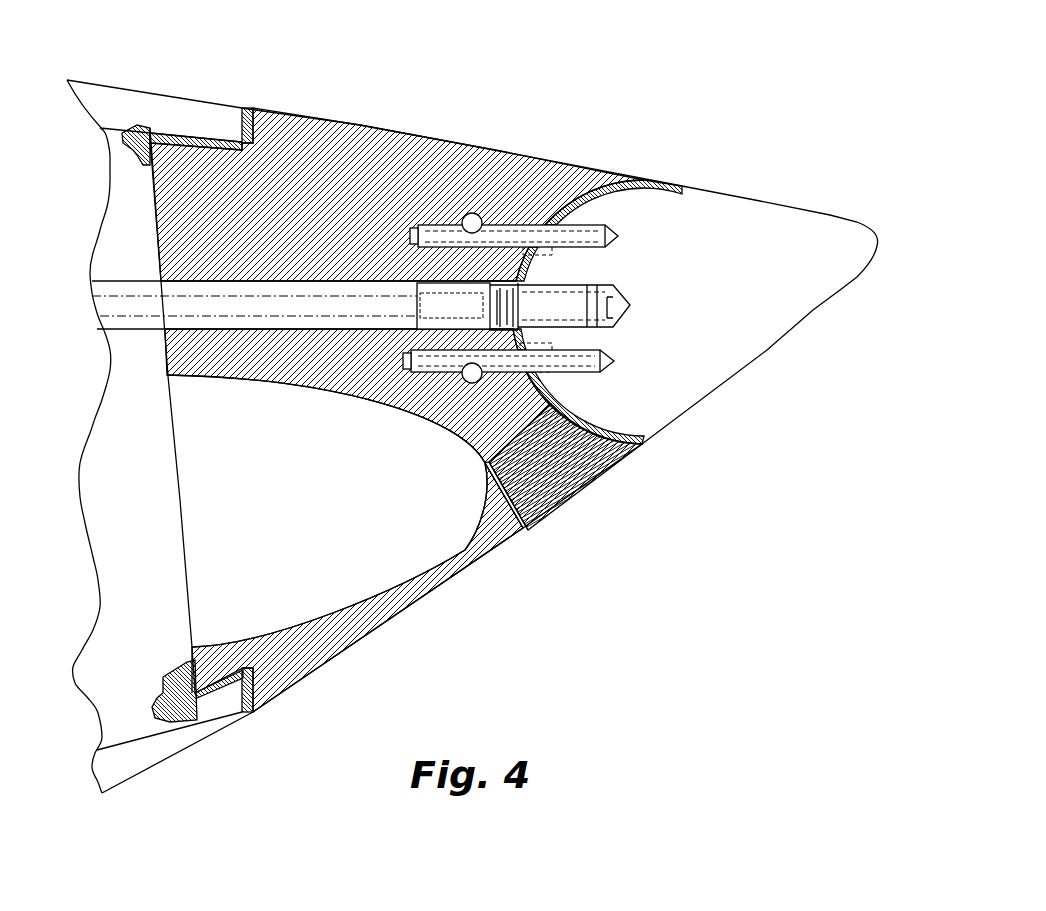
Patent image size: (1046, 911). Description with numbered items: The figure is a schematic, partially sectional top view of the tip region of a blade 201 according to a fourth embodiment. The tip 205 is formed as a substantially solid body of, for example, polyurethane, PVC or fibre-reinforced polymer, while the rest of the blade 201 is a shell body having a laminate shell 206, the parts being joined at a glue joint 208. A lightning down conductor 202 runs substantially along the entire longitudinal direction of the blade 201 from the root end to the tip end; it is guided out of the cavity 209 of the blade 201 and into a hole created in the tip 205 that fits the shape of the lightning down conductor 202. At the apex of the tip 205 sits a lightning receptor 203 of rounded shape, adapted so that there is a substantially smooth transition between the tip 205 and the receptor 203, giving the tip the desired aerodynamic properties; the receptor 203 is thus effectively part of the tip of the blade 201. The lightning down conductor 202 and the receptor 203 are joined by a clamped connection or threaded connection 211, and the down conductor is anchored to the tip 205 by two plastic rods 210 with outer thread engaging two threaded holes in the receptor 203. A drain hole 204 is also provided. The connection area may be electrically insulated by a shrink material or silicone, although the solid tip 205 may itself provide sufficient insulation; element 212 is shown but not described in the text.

The blade 201 is at (523, 407).
The lightning down conductor 202 is at (335, 301).
The lightning receptor 203 is at (778, 312).
The drain hole 204 is at (523, 528).
The tip 205 is at (597, 476).
The laminate shell 206 is at (117, 97).
The glue joint 208 is at (248, 108).
The cavity 209 is at (413, 565).
The plastic rods 210 is at (512, 232).
The threaded connection 211 is at (443, 293).
The bolt 212 is at (603, 231).